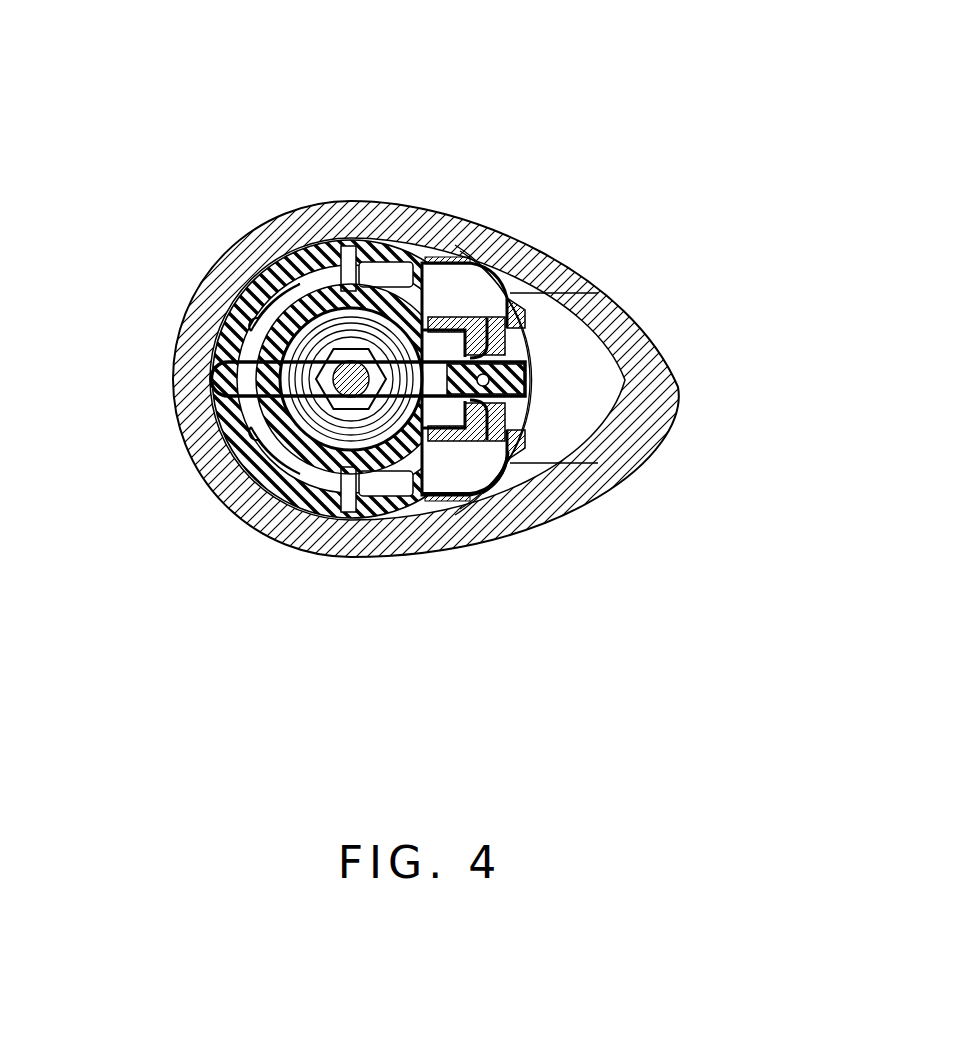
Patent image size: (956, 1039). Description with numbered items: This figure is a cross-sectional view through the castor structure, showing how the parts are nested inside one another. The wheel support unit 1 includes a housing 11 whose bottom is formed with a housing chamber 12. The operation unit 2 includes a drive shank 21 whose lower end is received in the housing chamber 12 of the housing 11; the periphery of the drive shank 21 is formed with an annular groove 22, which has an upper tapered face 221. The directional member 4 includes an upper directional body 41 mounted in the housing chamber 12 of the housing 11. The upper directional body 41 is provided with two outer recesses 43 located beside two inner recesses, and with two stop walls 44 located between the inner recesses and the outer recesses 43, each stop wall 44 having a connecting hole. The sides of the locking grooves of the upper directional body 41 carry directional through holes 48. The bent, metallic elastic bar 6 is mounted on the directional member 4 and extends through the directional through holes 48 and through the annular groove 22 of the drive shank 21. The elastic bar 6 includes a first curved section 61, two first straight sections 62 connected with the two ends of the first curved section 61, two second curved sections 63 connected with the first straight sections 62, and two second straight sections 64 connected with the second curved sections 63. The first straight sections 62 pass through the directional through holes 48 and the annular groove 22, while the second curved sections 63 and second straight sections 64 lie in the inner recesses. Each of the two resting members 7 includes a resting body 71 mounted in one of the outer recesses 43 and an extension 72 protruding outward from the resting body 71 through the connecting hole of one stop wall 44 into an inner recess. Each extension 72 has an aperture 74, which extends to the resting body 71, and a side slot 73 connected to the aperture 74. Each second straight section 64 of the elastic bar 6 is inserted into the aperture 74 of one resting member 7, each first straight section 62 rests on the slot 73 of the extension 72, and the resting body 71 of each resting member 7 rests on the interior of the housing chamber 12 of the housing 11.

The wheel support unit 1 is at (705, 178).
The housing 11 is at (607, 267).
The housing chamber 12 is at (600, 333).
The operation unit 2 is at (280, 648).
The drive shank 21 is at (345, 400).
The annular groove 22 is at (378, 405).
The upper tapered face 221 is at (242, 458).
The directional member 4 is at (287, 108).
The upper directional body 41 is at (328, 250).
The outer recesses 43 is at (425, 283).
The stop walls 44 is at (453, 340).
The directional through holes 48 is at (225, 350).
The elastic bar 6 is at (120, 225).
The first curved section 61 is at (210, 370).
The first straight sections 62 is at (272, 320).
The second curved sections 63 is at (535, 345).
The second straight sections 64 is at (488, 333).
The resting members 7 is at (578, 642).
The resting body 71 is at (445, 500).
The extension 72 is at (480, 490).
The slot 73 is at (472, 397).
The aperture 74 is at (537, 533).